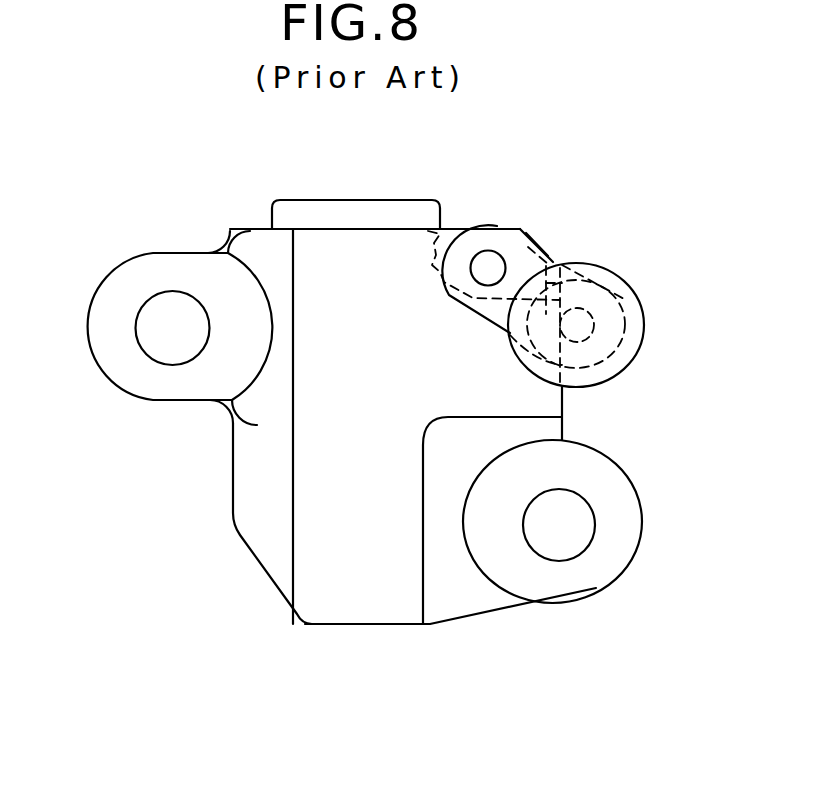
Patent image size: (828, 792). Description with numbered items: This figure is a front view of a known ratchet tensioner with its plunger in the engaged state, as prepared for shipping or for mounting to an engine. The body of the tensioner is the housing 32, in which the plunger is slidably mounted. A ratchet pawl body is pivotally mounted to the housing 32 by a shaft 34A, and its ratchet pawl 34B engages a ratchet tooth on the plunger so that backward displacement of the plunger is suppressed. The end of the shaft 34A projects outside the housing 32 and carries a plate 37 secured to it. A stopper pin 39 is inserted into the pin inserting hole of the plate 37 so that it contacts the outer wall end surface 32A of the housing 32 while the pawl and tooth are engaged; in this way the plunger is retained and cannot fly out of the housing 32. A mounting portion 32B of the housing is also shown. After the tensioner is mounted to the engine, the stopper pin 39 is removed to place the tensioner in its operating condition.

The housing 32 is at (318, 467).
The outer wall end surface 32A is at (560, 265).
The mounting boss with hole 32B is at (163, 312).
The shaft 34A is at (492, 267).
The ratchet pawl 34B is at (455, 228).
The plate 37 is at (498, 240).
The stopper pin 39 is at (626, 288).